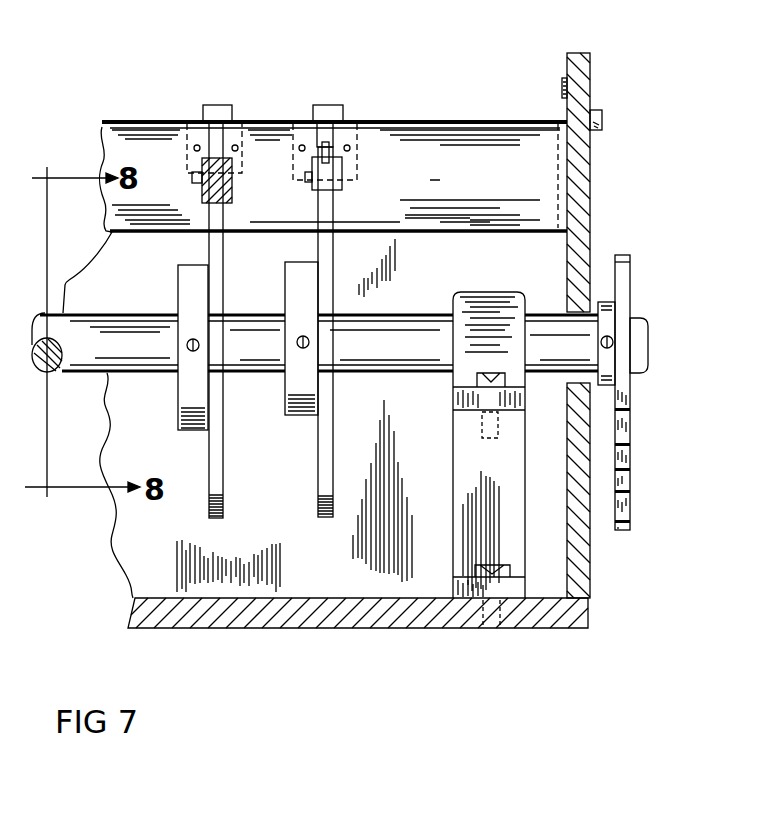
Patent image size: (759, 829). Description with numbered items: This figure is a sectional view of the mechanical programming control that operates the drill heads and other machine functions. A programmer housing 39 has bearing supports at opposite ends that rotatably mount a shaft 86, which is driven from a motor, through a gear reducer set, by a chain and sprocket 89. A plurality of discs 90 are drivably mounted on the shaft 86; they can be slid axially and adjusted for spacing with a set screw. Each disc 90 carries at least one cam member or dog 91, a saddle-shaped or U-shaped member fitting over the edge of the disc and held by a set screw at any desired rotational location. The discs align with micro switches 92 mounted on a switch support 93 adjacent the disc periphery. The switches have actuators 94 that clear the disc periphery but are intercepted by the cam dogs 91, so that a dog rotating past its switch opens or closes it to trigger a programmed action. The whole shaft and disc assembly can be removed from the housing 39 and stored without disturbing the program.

The programmer housing 39 is at (600, 202).
The shaft 86 is at (148, 320).
The chain and sprocket 89 is at (643, 492).
The discs 90 is at (318, 483).
The cam members or dogs 91 is at (229, 190).
The micro switches 92 is at (317, 104).
The switch support 93 is at (503, 222).
The actuators 94 is at (329, 150).